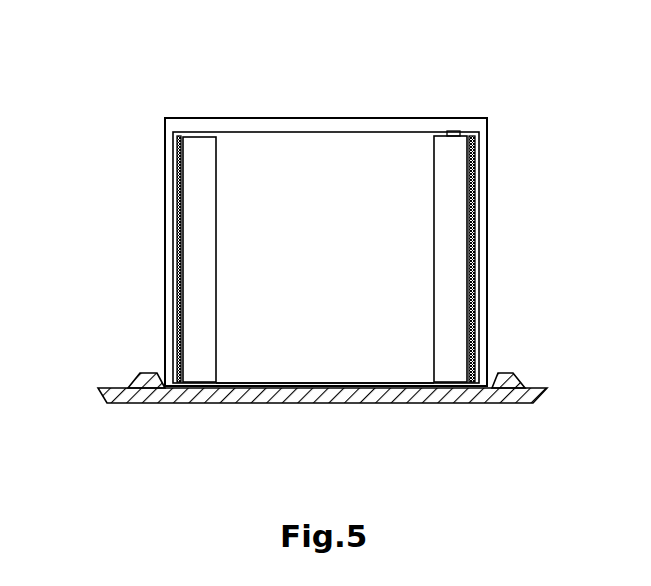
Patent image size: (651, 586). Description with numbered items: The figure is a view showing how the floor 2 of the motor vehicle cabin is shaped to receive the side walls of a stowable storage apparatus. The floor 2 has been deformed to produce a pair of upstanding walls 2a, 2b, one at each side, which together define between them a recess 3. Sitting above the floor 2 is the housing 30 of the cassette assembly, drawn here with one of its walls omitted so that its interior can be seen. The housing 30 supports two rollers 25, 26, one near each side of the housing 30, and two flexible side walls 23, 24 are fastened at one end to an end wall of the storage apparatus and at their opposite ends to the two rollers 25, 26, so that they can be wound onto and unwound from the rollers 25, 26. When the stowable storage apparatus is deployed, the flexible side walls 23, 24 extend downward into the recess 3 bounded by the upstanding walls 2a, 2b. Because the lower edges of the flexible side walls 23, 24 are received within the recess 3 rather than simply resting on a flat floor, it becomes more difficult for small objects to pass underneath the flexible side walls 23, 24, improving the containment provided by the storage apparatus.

The floor 2 is at (318, 432).
The upstanding wall 2a is at (92, 351).
The upstanding wall 2b is at (555, 352).
The recess 3 is at (262, 349).
The flexible side wall 23 is at (135, 200).
The flexible side wall 24 is at (507, 200).
The roller 25 is at (224, 200).
The roller 26 is at (419, 200).
The housing 30 is at (326, 202).